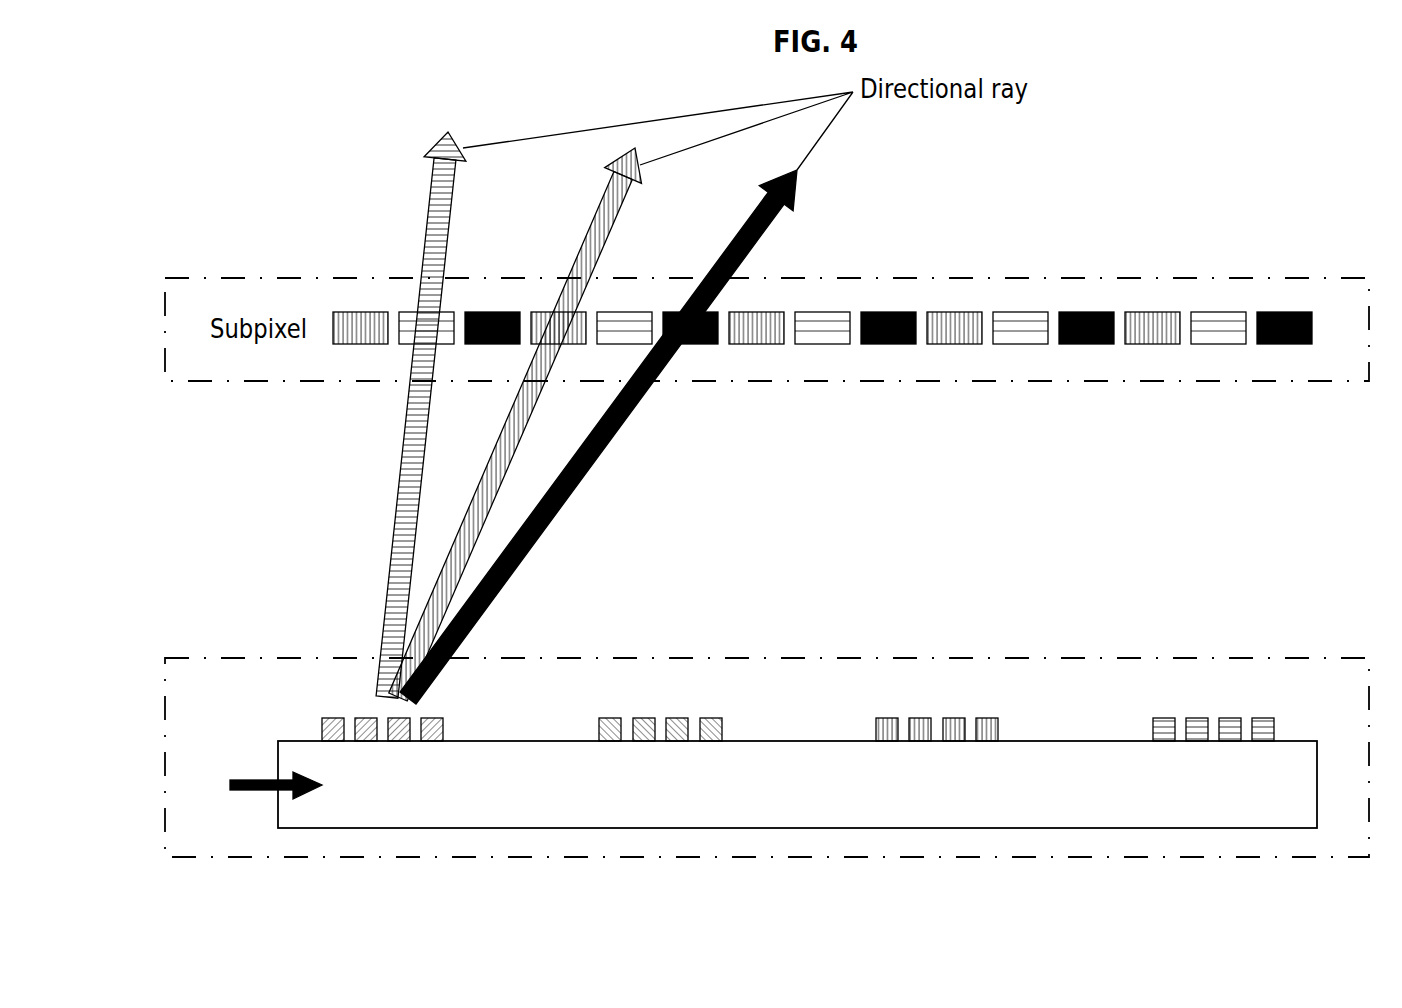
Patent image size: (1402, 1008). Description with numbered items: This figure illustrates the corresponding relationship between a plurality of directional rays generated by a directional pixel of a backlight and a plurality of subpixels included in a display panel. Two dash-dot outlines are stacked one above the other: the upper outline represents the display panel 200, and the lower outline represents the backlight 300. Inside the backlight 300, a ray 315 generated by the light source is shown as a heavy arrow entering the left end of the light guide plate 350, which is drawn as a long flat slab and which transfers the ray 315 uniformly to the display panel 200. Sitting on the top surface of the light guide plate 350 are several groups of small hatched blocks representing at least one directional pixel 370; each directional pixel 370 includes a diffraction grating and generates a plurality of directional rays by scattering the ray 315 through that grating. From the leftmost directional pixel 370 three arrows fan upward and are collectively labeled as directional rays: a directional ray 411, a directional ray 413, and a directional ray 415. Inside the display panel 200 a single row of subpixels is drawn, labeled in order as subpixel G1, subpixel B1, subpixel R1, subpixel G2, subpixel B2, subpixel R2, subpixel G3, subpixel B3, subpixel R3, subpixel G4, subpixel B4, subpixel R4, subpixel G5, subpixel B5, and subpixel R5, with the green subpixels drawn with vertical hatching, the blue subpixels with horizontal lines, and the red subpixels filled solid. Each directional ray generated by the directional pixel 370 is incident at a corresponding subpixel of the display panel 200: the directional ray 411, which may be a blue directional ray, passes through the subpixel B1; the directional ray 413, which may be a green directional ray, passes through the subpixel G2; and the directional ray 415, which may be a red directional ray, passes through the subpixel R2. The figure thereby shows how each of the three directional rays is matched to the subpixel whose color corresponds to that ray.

The display panel 200 is at (1248, 278).
The backlight 300 is at (1248, 658).
The ray 315 is at (260, 778).
The light guide plate 350 is at (798, 828).
The directional pixel 370 is at (412, 718).
The directional ray 411 is at (431, 190).
The directional ray 413 is at (603, 197).
The directional ray 415 is at (750, 217).
The subpixel G1 is at (362, 344).
The subpixel B1 is at (447, 344).
The subpixel R1 is at (491, 312).
The subpixel G2 is at (560, 344).
The subpixel B2 is at (627, 312).
The subpixel R2 is at (698, 344).
The subpixel G3 is at (755, 344).
The subpixel B3 is at (821, 344).
The subpixel R3 is at (887, 344).
The subpixel G4 is at (953, 344).
The subpixel B4 is at (1019, 344).
The subpixel R4 is at (1085, 344).
The subpixel G5 is at (1151, 344).
The subpixel B5 is at (1217, 344).
The subpixel R5 is at (1283, 344).